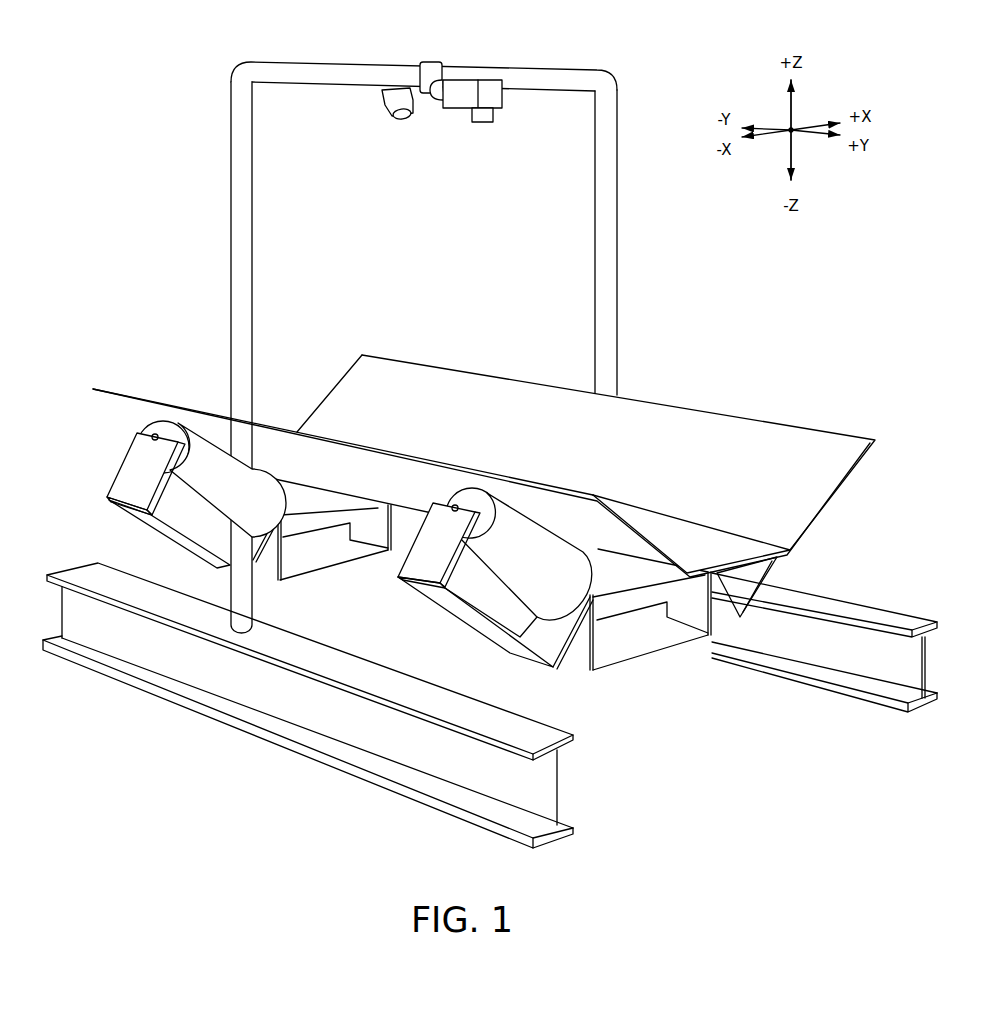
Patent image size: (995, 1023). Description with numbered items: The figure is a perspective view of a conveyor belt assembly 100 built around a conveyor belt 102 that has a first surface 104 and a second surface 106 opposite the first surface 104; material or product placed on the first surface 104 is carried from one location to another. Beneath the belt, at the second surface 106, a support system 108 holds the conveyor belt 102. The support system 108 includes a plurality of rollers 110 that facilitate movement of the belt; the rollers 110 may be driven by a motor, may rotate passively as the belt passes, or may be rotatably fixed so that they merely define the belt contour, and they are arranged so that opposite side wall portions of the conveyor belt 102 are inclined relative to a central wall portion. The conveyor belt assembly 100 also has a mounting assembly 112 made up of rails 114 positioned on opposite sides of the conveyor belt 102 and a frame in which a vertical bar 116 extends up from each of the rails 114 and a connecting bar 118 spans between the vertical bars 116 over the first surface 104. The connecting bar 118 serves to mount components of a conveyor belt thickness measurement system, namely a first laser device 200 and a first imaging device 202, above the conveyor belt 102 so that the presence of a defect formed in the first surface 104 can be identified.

The conveyor belt assembly 100 is at (131, 91).
The conveyor belt 102 is at (839, 419).
The first surface 104 is at (705, 422).
The second surface 106 is at (150, 436).
The support system 108 is at (690, 678).
The rollers 110 is at (197, 442).
The mounting assembly 112 is at (283, 794).
The rails 114 is at (187, 672).
The vertical bar 116 is at (232, 212).
The connecting bar 118 is at (297, 72).
The first laser device 200 is at (467, 82).
The first imaging device 202 is at (383, 106).